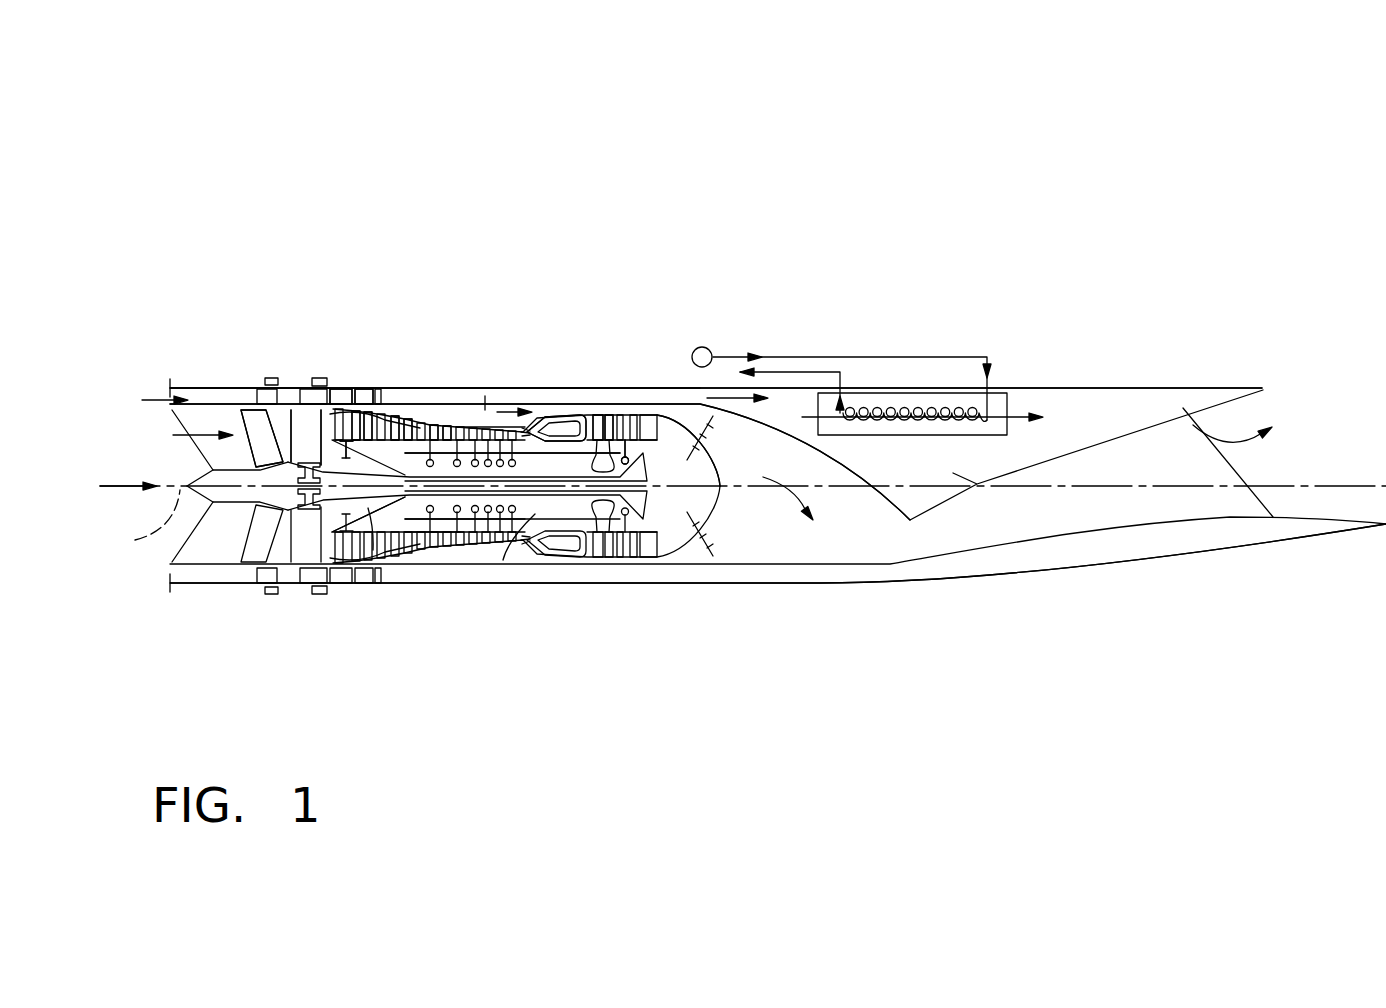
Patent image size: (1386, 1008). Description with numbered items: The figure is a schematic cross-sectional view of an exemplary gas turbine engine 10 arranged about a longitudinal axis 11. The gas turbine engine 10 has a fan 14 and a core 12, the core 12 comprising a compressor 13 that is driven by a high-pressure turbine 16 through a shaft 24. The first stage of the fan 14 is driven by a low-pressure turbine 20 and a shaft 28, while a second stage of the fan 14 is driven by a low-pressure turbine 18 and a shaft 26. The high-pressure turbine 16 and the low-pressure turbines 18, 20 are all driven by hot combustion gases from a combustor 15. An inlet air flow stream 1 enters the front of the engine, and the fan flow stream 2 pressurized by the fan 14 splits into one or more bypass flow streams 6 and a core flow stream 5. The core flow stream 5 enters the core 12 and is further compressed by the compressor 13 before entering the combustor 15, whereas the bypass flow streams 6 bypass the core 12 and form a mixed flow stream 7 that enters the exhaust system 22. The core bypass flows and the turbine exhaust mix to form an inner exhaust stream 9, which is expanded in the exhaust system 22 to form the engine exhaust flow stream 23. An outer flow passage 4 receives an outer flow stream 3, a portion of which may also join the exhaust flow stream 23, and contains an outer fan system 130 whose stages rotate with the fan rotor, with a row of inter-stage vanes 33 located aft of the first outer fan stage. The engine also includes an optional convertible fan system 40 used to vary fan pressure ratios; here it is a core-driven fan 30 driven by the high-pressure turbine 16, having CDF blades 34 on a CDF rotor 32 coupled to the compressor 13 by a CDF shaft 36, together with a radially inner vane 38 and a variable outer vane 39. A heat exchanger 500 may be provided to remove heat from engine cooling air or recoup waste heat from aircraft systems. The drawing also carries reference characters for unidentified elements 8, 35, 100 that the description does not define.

The inlet air flow stream 1 is at (114, 488).
The fan flow stream 2 is at (203, 437).
The outer flow stream 3 is at (153, 397).
The outer flow passage 4 is at (206, 388).
The core flow stream 5 is at (347, 427).
The bypass flow streams 6 is at (380, 413).
The mixed flow stream 7 is at (510, 408).
The bypass exhaust flow 8 is at (728, 397).
The inner exhaust stream 9 is at (787, 500).
The gas turbine engine 10 is at (270, 177).
The longitudinal axis 11 is at (144, 521).
The core 12 is at (543, 505).
The compressor 13 is at (485, 398).
The fan 14 is at (366, 520).
The combustor 15 is at (563, 412).
The high-pressure turbine 16 is at (594, 412).
The low-pressure turbine 18 is at (606, 412).
The low-pressure turbine 20 is at (630, 412).
The exhaust system 22 is at (745, 434).
The engine exhaust flow stream 23 is at (1194, 426).
The shaft 24 is at (565, 442).
The shaft 26 is at (627, 462).
The shaft 28 is at (648, 473).
The fan 30 is at (408, 456).
The CDF rotor 32 is at (395, 425).
The inter-stage vanes 33 is at (360, 396).
The CDF blades 34 is at (434, 428).
The core cowl 35 is at (387, 543).
The CDF shaft 36 is at (467, 412).
The radially inner vane 38 is at (410, 538).
The outer vane 39 is at (408, 570).
The convertible fan system 40 is at (268, 672).
The turbofan engine assembly 100 is at (268, 346).
The outer fan system 130 is at (391, 289).
The heat exchanger 500 is at (956, 352).